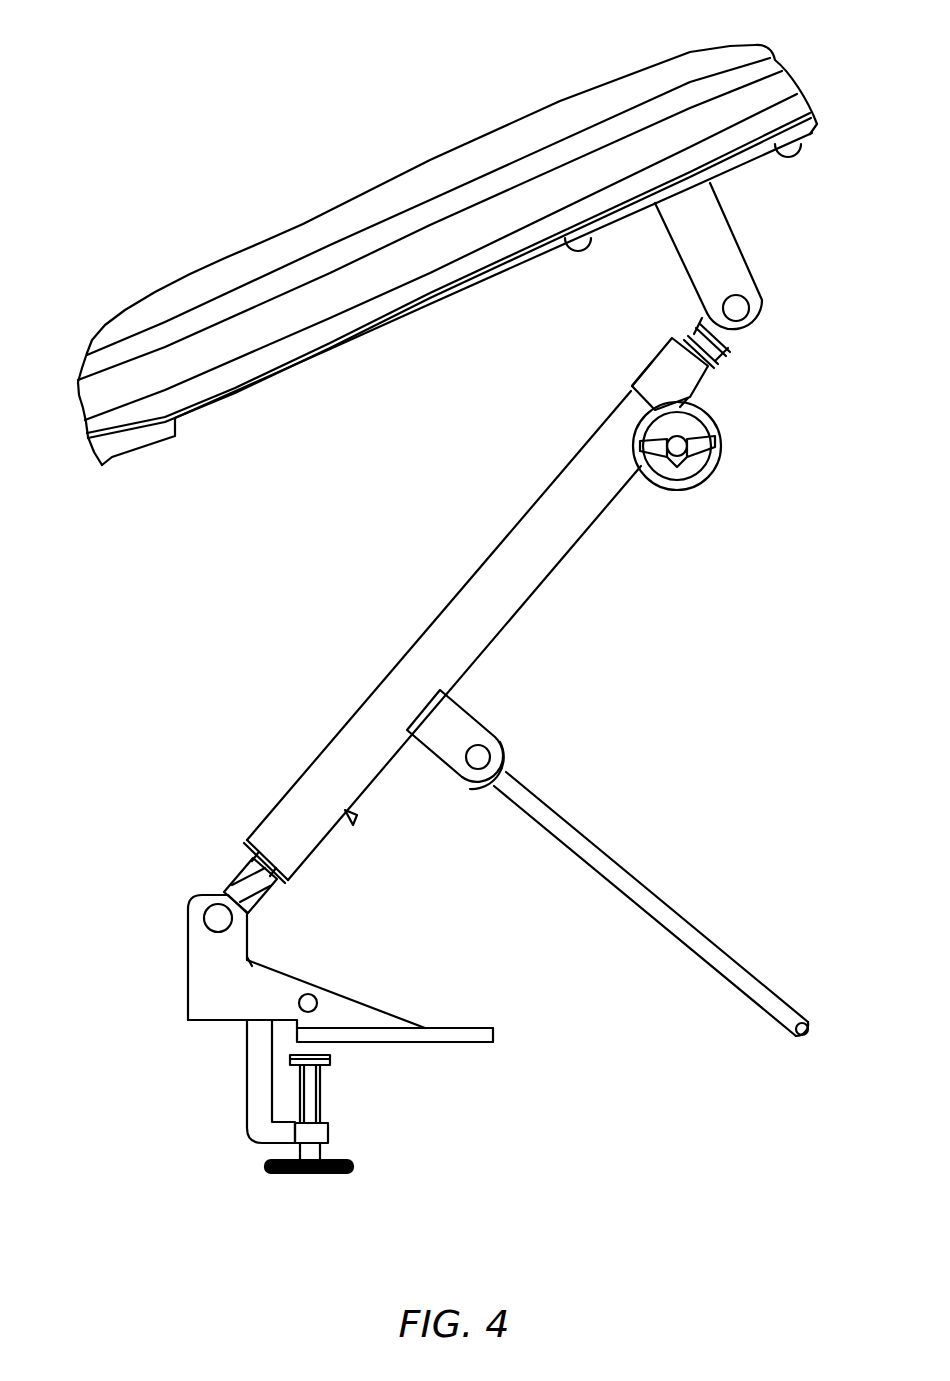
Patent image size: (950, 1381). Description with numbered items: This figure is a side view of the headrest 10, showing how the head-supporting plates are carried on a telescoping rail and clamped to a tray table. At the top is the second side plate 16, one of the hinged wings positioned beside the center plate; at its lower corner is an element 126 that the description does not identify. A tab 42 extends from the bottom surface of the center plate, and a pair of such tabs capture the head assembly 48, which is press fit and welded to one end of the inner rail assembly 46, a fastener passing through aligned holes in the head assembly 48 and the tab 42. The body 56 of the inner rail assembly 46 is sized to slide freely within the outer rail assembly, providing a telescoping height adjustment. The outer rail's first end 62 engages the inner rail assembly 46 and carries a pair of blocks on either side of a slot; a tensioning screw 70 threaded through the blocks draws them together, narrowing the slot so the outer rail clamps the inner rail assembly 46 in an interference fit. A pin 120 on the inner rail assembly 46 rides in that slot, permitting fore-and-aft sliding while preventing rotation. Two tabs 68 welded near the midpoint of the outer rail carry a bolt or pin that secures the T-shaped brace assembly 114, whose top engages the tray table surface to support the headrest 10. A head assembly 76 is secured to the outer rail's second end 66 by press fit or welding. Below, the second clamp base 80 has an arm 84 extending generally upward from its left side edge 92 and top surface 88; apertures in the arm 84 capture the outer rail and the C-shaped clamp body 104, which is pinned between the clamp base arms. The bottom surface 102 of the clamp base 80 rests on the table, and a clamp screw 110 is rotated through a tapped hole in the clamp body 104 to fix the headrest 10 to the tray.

The headrest 10 is at (264, 86).
The second side plate 16 is at (260, 254).
The tab 42 is at (718, 235).
The inner rail assembly 46 is at (670, 363).
The head assembly 48 is at (722, 345).
The first end 62 is at (625, 408).
The tensioning screw 70 is at (680, 450).
The body 56 is at (440, 633).
The second end 66 is at (273, 815).
The tab 68 is at (467, 735).
The brace assembly 114 is at (680, 930).
The pin 120 is at (355, 822).
The head assembly 76 is at (250, 875).
The arm 84 is at (210, 950).
The left side edge 92 is at (208, 1005).
The top surface 88 is at (423, 1033).
The second clamp base 80 is at (470, 1035).
The bottom surface 102 is at (438, 1042).
The clamp body 104 is at (257, 1077).
The clamp screw 110 is at (310, 1170).
The pad mounting tab 126 is at (123, 453).